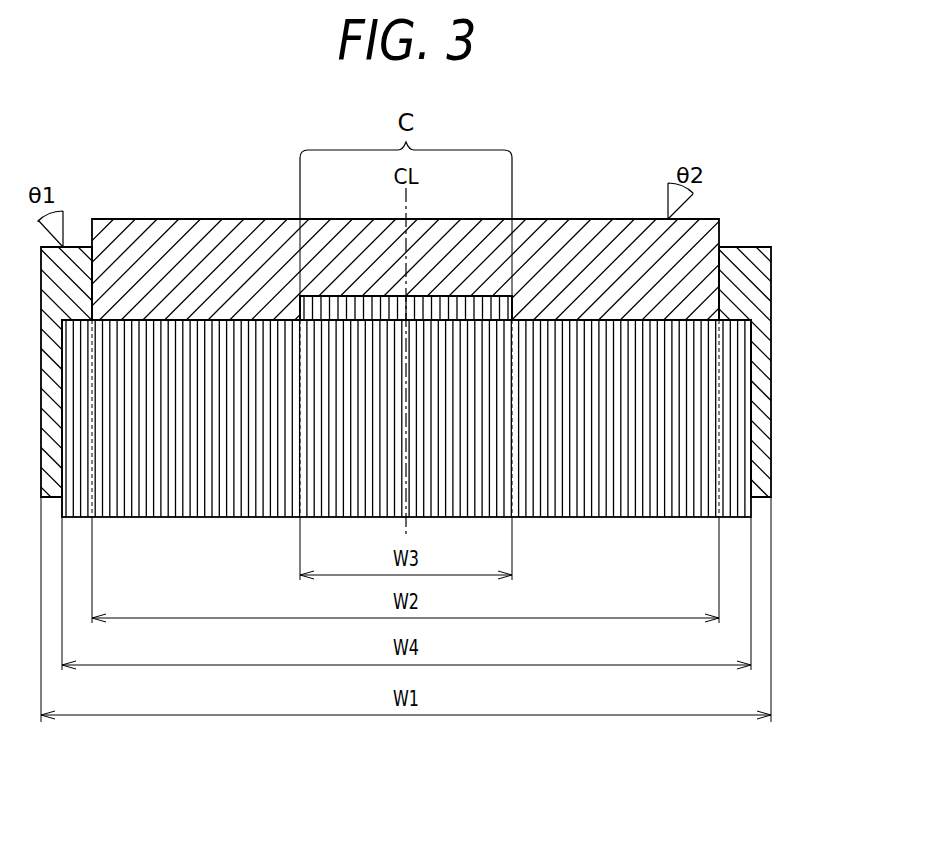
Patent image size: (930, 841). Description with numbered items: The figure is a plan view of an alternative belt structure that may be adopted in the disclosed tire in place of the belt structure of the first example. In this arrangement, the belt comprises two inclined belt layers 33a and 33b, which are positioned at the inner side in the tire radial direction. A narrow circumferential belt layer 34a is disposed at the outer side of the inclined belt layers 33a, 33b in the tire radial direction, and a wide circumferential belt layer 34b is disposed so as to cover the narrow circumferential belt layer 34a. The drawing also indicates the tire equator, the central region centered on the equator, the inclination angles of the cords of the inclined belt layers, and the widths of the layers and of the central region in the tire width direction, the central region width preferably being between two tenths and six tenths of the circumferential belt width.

The inclined belt layer 33a is at (743, 288).
The inclined belt layer 33b is at (720, 220).
The narrow circumferential belt layer 34a is at (357, 296).
The wide circumferential belt layer 34b is at (602, 498).